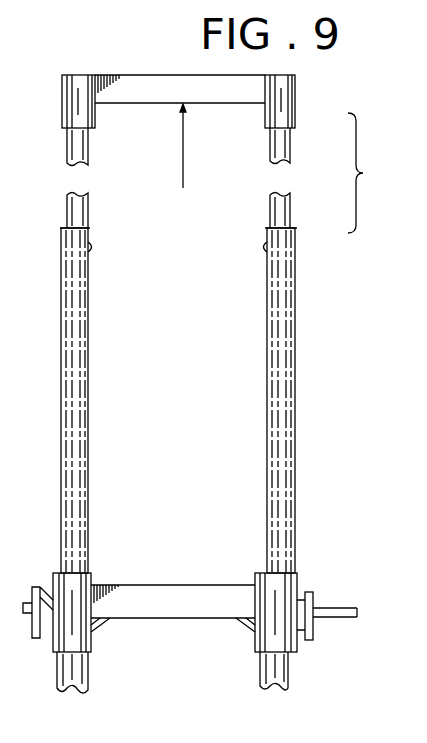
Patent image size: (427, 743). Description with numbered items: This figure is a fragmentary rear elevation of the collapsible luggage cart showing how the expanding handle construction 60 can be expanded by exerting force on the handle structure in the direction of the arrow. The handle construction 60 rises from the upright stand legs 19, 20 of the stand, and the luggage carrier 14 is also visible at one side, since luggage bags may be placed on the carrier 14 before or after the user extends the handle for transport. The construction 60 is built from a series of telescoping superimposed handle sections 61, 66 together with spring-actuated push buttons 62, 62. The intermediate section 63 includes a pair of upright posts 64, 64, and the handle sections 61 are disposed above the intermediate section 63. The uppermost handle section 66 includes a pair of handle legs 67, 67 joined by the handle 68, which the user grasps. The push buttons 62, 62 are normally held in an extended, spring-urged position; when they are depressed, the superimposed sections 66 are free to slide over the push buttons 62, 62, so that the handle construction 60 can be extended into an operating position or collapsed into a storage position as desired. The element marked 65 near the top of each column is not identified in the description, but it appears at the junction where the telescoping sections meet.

The luggage carrier 14 is at (341, 608).
The upright stand leg 19 is at (92, 674).
The upright stand leg 20 is at (288, 668).
The expanding handle construction 60 is at (53, 257).
The handle section 61 is at (83, 437).
The push button 62 is at (88, 656).
The intermediate section 63 is at (163, 580).
The upright post 64 is at (298, 577).
The upper collar pin 65 is at (94, 250).
The uppermost handle section 66 is at (290, 151).
The handle leg 67 is at (295, 103).
The handle 68 is at (140, 76).